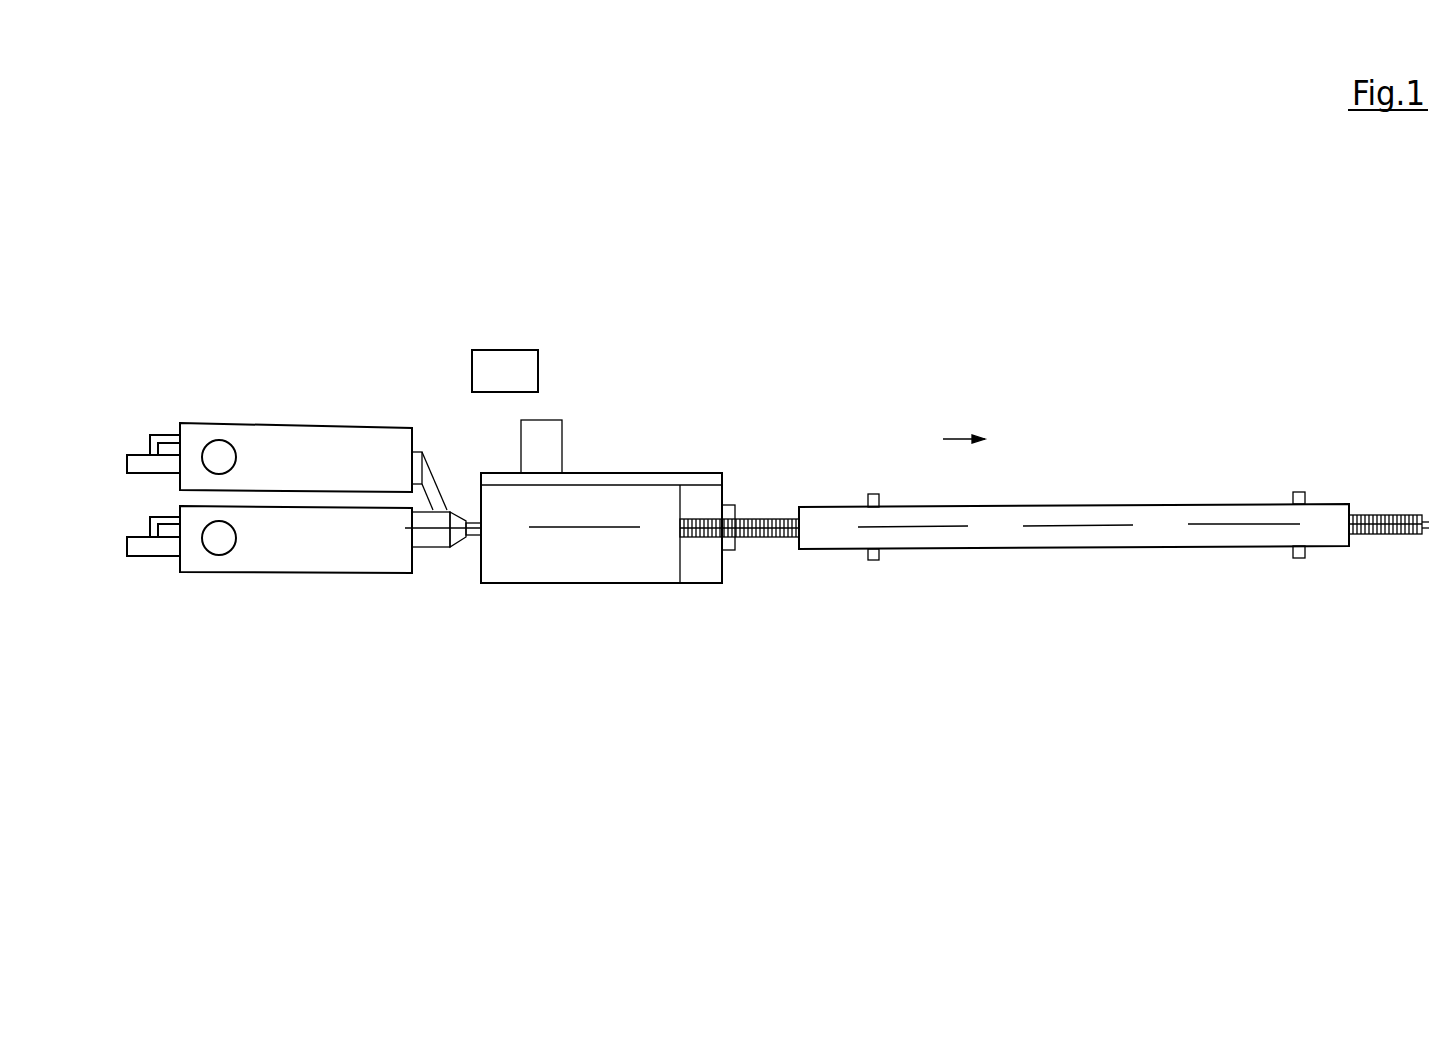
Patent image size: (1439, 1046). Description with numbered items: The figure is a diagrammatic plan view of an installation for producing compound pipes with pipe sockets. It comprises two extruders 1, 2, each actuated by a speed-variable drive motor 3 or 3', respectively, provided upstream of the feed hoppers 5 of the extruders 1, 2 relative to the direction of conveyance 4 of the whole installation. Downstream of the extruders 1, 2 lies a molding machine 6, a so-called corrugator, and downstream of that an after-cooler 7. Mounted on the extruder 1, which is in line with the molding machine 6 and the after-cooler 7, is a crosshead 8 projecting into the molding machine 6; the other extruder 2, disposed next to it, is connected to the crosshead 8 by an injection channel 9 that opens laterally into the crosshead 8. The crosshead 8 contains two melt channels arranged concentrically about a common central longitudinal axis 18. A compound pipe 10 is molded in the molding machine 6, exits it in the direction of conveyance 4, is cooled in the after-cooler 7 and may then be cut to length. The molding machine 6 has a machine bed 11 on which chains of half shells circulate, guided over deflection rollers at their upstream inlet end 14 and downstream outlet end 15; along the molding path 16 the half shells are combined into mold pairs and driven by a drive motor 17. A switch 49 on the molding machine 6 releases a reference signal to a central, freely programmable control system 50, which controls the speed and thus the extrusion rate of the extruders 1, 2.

The extruder 1 is at (310, 553).
The extruder 2 is at (310, 471).
The speed-variable drive motor 3 is at (163, 635).
The speed-variable drive motor 3' is at (166, 389).
The direction of conveyance 4 is at (959, 439).
The feed hopper 5 is at (218, 455).
The molding machine 6 is at (597, 583).
The after-cooler 7 is at (1063, 547).
The crosshead 8 is at (429, 538).
The injection channel 9 is at (432, 458).
The compound pipe 10 is at (763, 513).
The machine bed 11 is at (708, 563).
The inlet end 14 is at (474, 537).
The outlet end 15 is at (682, 547).
The molding path 16 is at (536, 558).
The drive motor 17 is at (545, 437).
The central longitudinal axis 18 is at (999, 527).
The switch 49 is at (642, 480).
The control system 50 is at (489, 384).